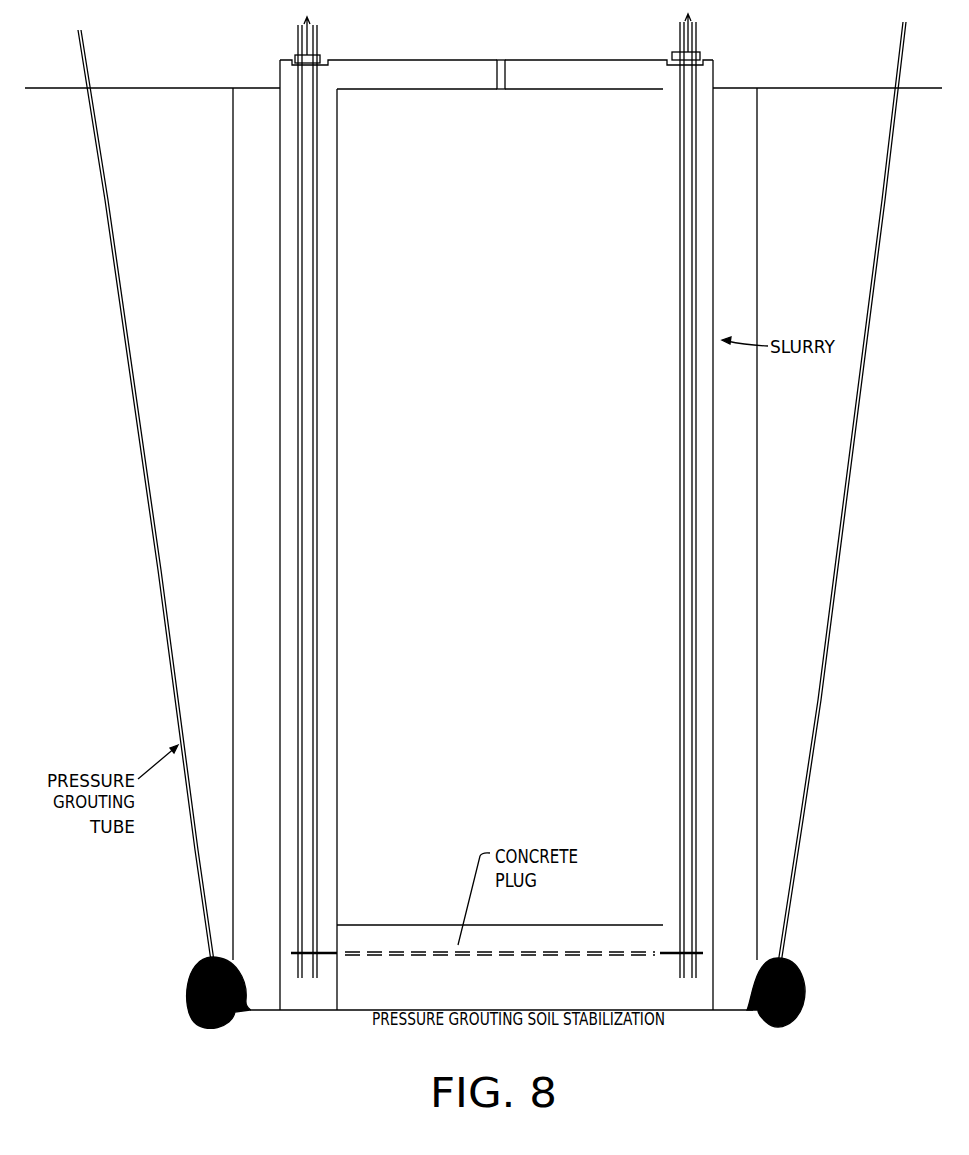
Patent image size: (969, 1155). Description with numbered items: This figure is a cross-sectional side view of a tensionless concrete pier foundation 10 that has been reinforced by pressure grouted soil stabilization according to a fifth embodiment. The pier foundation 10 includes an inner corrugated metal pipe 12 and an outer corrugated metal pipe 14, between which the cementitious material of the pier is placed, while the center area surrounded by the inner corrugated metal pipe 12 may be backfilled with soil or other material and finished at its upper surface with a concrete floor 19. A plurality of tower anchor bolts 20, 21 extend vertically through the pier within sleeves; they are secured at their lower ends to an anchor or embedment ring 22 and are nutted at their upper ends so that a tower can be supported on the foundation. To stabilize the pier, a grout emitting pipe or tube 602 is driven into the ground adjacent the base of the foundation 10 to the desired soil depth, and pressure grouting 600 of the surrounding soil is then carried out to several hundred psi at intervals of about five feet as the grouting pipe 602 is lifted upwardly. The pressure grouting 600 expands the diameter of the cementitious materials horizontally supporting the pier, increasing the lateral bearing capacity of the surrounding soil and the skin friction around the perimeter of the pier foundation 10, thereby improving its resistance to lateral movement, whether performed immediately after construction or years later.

The concrete pier foundation 10 is at (280, 610).
The inner corrugated metal pipe 12 is at (343, 594).
The outer corrugated metal pipe 14 is at (723, 186).
The concrete floor 19 is at (527, 75).
The tower anchor bolt 20 is at (700, 388).
The tower anchor bolt 21 is at (686, 399).
The embedment ring 22 is at (322, 953).
The pressure grouting 600 is at (800, 1000).
The grout emitting pipe 602 is at (816, 752).